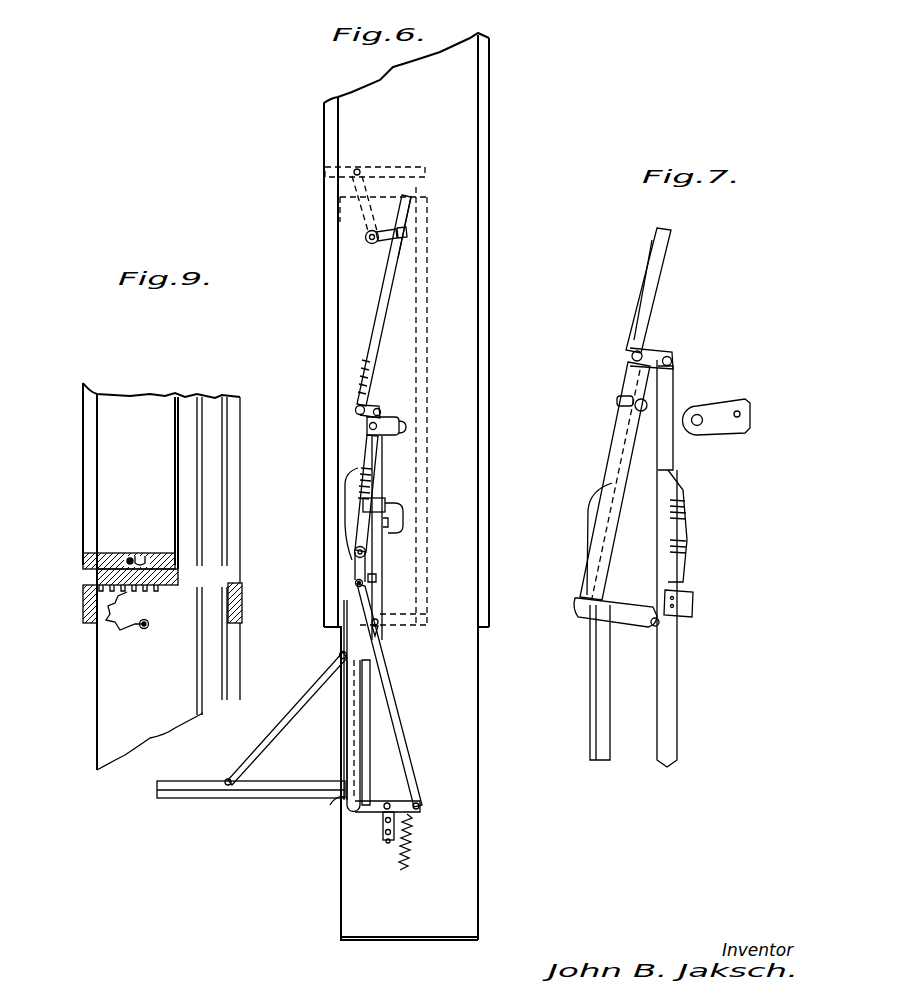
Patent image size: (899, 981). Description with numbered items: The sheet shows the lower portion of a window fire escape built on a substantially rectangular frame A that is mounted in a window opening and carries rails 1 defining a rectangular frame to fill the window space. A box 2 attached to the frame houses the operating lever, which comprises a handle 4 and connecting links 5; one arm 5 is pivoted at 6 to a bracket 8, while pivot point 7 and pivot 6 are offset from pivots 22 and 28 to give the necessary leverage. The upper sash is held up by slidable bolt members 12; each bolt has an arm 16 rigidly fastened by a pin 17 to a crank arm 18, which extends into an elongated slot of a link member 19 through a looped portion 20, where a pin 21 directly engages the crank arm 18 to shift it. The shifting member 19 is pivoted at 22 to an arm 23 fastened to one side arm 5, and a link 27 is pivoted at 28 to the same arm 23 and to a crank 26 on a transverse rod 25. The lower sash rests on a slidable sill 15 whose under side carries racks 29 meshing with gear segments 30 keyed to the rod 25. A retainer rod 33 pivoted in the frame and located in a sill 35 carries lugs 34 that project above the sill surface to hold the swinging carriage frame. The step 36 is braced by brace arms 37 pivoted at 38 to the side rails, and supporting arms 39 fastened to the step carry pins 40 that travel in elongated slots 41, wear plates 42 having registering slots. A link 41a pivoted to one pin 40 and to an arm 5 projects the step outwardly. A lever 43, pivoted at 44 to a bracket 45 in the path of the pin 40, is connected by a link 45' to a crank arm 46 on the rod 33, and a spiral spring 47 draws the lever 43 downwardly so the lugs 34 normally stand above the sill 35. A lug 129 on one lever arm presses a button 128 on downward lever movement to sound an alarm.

In FIG. 6, the frame A is at (347, 126).
In FIG. 9, the frame A is at (130, 398).
In FIG. 9, the rails 1 is at (82, 473).
In FIG. 6, the box 2 is at (427, 343).
In FIG. 6, the handle 4 is at (354, 554).
In FIG. 7, the handle 4 is at (626, 628).
In FIG. 6, the connecting links 5 is at (368, 454).
In FIG. 7, the connecting links 5 is at (582, 576).
In FIG. 6, the pivot 6 is at (370, 428).
In FIG. 7, the pivot 6 is at (699, 426).
In FIG. 7, the pivot point 7 is at (628, 409).
In FIG. 6, the bracket 8 is at (388, 418).
In FIG. 7, the bracket 8 is at (722, 408).
In FIG. 6, the slidable bolt members 12 is at (413, 165).
In FIG. 9, the slidable sill 15 is at (97, 578).
In FIG. 6, the arm 16 is at (340, 218).
In FIG. 6, the pin 17 is at (365, 240).
In FIG. 6, the crank arm 18 is at (378, 243).
In FIG. 6, the link member 19 is at (376, 330).
In FIG. 7, the link member 19 is at (640, 293).
In FIG. 6, the looped portion 20 is at (400, 263).
In FIG. 6, the pin 21 is at (400, 234).
In FIG. 6, the pivot 22 is at (355, 410).
In FIG. 7, the pivot 22 is at (642, 352).
In FIG. 7, the arm 23 is at (648, 382).
In FIG. 9, the transverse rod 25 is at (142, 630).
In FIG. 6, the crank 26 is at (380, 632).
In FIG. 6, the link 27 is at (383, 563).
In FIG. 7, the link 27 is at (678, 722).
In FIG. 6, the pivot 28 is at (380, 410).
In FIG. 7, the pivot 28 is at (673, 358).
In FIG. 9, the racks 29 is at (145, 590).
In FIG. 9, the gear segments 30 is at (120, 622).
In FIG. 6, the retainer rod 33 is at (377, 578).
In FIG. 9, the retainer rod 33 is at (130, 557).
In FIG. 9, the lugs 34 is at (146, 556).
In FIG. 9, the sill 35 is at (83, 557).
In FIG. 6, the step 36 is at (207, 779).
In FIG. 6, the brace arms 37 is at (272, 740).
In FIG. 6, the pivot 38 is at (339, 656).
In FIG. 6, the supporting arms 39 is at (273, 798).
In FIG. 6, the pins 40 is at (333, 806).
In FIG. 6, the elongated slots 41 is at (345, 748).
In FIG. 7, the elongated slots 41 is at (593, 680).
In FIG. 6, the link 41a is at (346, 637).
In FIG. 7, the link 41a is at (614, 464).
In FIG. 6, the wear plates 42 is at (368, 740).
In FIG. 6, the lever 43 is at (383, 824).
In FIG. 6, the pivot 44 is at (395, 800).
In FIG. 6, the bracket 45 is at (375, 861).
In FIG. 6, the link 45' is at (449, 695).
In FIG. 6, the crank arm 46 is at (354, 583).
In FIG. 6, the spiral spring 47 is at (410, 845).
In FIG. 6, the button 128 is at (400, 523).
In FIG. 6, the lug 129 is at (365, 507).
In FIG. 7, the lug 129 is at (686, 604).